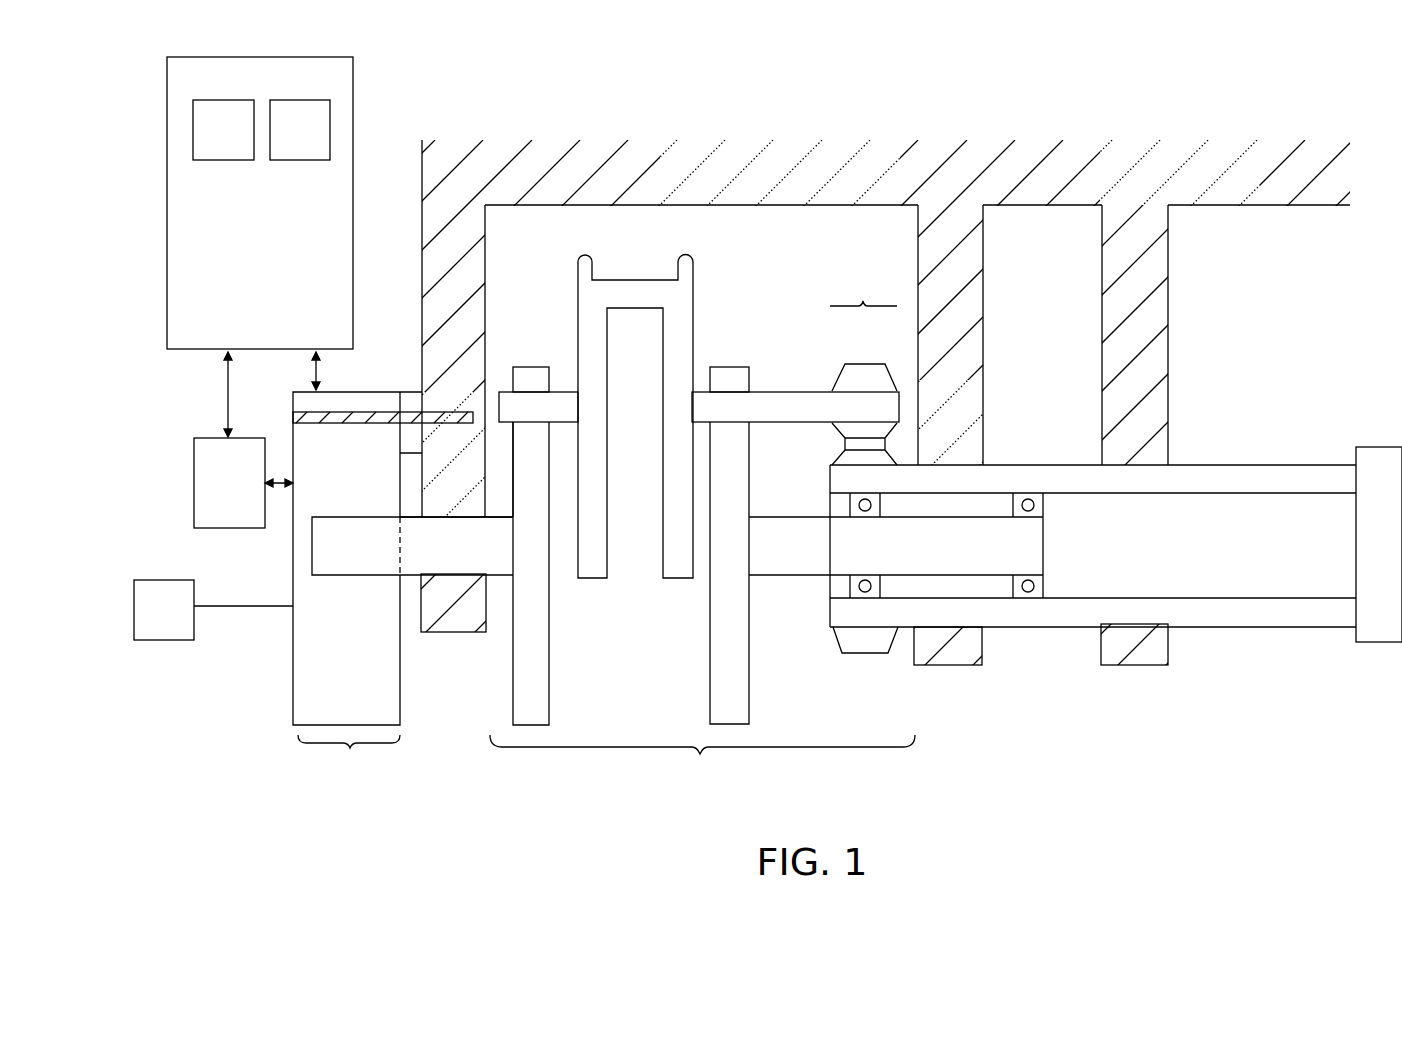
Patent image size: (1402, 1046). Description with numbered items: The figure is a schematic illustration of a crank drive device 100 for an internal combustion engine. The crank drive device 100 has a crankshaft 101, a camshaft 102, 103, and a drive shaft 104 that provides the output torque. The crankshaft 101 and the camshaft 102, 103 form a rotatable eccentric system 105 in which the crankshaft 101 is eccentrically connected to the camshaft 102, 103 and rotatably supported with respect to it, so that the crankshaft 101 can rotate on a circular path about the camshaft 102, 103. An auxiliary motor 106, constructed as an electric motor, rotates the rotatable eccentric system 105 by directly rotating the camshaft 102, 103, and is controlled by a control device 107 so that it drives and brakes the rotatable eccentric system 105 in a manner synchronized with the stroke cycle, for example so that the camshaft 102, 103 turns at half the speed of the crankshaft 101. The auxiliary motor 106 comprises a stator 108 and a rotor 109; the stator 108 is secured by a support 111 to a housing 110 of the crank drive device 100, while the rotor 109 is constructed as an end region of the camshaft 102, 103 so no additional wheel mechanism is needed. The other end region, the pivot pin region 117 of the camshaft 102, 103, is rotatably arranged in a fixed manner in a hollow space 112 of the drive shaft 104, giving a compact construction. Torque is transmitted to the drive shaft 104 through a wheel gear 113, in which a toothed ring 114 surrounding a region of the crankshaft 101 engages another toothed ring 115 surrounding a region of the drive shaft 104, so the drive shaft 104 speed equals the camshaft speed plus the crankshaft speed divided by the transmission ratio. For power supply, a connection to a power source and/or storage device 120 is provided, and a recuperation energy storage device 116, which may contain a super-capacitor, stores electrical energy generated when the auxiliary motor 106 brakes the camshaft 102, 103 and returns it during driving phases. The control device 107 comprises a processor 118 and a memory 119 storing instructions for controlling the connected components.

The crank drive device 100 is at (958, 108).
The crankshaft 101 is at (665, 292).
The camshaft 102 is at (510, 566).
The camshaft 103 is at (767, 555).
The drive shaft 104 is at (1242, 612).
The rotatable eccentric system 105 is at (702, 533).
The auxiliary motor 106 is at (366, 550).
The control device 107 is at (228, 298).
The stator 108 is at (320, 632).
The rotor 109 is at (320, 548).
The housing 110 is at (552, 147).
The support 111 is at (350, 418).
The hollow space 112 is at (1252, 480).
The wheel gear 113 is at (826, 369).
The toothed ring 114 is at (845, 378).
The toothed ring 115 is at (865, 640).
The recuperation energy storage device 116 is at (209, 496).
The pivot pin region 117 is at (960, 563).
The processor 118 is at (223, 130).
The memory 119 is at (300, 130).
The power source and/or storage device 120 is at (213, 610).